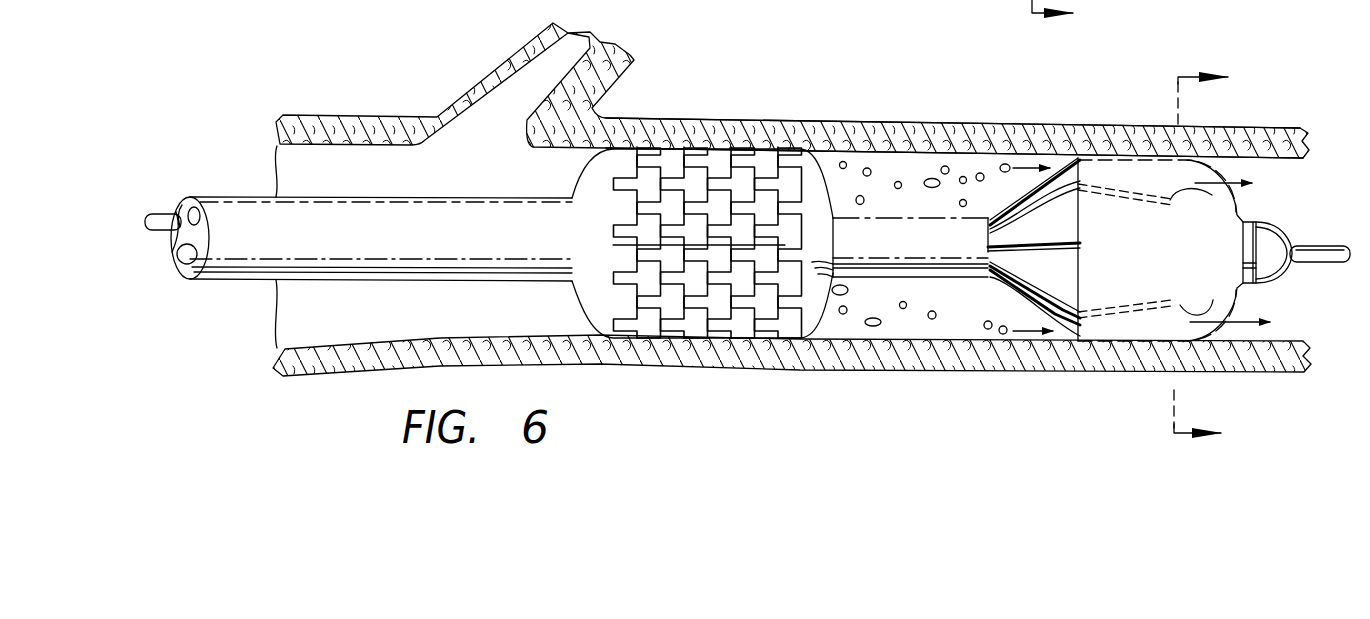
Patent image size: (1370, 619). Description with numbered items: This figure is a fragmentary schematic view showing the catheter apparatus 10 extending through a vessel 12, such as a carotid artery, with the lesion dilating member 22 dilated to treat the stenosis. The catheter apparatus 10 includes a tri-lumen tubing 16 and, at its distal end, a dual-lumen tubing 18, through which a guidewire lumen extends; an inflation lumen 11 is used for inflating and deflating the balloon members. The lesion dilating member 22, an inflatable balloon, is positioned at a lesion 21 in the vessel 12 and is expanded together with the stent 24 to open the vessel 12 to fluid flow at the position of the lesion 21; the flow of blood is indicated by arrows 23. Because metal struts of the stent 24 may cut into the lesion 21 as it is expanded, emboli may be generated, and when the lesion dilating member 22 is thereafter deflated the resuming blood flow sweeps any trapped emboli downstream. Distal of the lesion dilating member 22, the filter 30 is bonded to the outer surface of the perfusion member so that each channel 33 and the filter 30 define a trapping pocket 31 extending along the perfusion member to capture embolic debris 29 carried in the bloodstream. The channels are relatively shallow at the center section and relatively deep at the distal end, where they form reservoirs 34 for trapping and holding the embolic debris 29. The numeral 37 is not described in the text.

The catheter apparatus 10 is at (1080, 19).
The inflation lumen 11 is at (1222, 259).
The vessel 12 is at (966, 128).
The tri-lumen tubing 16 is at (220, 268).
The dual-lumen tubing 18 is at (881, 263).
The lesion 21 is at (705, 135).
The lesion dilating member 22 is at (590, 185).
The arrows 23 is at (563, 182).
The stent 24 is at (612, 301).
The embolic debris 29 is at (931, 179).
The filter 30 is at (1100, 345).
The trapping pocket 31 is at (1122, 173).
The channel 33 is at (1045, 310).
The reservoir 34 is at (1208, 310).
The guide wire 37 is at (1185, 7).